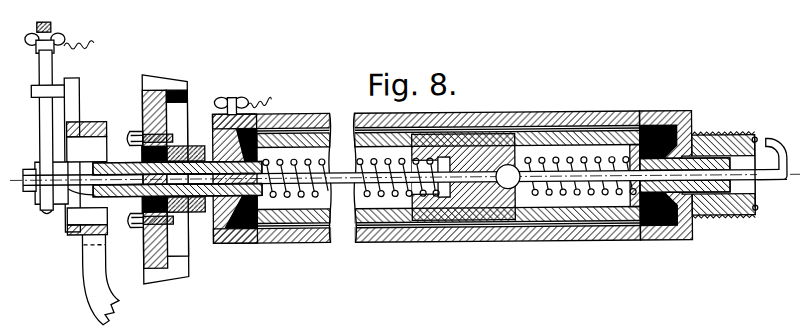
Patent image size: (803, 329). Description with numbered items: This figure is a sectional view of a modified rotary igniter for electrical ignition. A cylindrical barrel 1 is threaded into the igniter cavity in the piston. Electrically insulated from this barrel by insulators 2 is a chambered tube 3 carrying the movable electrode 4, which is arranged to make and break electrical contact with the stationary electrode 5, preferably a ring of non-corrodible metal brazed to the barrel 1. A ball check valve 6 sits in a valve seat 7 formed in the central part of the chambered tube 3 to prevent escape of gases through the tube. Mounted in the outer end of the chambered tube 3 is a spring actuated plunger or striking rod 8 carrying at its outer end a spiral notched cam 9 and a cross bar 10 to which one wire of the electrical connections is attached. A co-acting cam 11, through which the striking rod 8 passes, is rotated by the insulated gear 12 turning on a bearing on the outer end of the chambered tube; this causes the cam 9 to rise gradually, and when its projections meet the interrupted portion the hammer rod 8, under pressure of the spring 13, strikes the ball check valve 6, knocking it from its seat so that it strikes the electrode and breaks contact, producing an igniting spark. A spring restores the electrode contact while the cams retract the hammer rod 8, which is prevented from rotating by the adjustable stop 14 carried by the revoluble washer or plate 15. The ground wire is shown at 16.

The cylindrical barrel 1 is at (297, 242).
The insulators 2 is at (250, 241).
The chambered tube 3 is at (622, 244).
The movable electrode 4 is at (770, 142).
The stationary electrode 5 is at (755, 213).
The ball check valve 6 is at (510, 166).
The valve seat 7 is at (497, 190).
The striking rod 8 is at (340, 194).
The spiral notched cam 9 is at (65, 199).
The cross bar 10 is at (50, 65).
The co-acting cam 11 is at (115, 204).
The insulated gear 12 is at (172, 271).
The spring 13 is at (297, 159).
The adjustable stop 14 is at (33, 87).
The revoluble washer 15 is at (83, 124).
The ground wire 16 is at (262, 98).